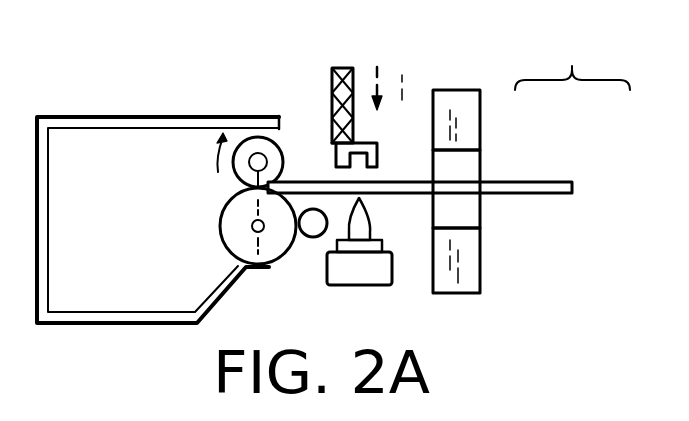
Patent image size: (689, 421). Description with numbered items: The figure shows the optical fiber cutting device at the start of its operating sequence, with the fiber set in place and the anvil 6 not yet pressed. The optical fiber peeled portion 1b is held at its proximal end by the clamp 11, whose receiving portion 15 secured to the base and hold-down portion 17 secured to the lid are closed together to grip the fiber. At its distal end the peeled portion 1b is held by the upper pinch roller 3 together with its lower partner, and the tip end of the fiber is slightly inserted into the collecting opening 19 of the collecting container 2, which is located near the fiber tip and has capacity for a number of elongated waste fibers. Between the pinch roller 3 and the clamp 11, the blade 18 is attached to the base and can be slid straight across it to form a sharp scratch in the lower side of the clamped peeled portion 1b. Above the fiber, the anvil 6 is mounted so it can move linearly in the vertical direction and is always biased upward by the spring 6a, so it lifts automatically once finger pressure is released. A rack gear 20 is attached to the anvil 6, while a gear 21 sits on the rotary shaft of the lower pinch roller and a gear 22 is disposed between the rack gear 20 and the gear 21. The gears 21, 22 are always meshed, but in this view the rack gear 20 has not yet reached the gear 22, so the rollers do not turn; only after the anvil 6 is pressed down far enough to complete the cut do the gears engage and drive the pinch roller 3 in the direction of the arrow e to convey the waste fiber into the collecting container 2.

The collecting container 2 is at (133, 117).
The upper pinch roller 3 is at (286, 146).
The anvil 6 is at (343, 67).
The spring 6a is at (353, 70).
The clamp 11 is at (572, 56).
The receiving portion 15 is at (482, 265).
The hold-down portion 17 is at (473, 115).
The blade 18 is at (371, 224).
The collecting opening 19 is at (287, 137).
The rack gear 20 is at (331, 130).
The gear 21 is at (277, 264).
The gear 22 is at (313, 237).
The rotation direction of pinch rollers e is at (211, 147).
The optical fiber peeled portion 1b is at (400, 181).